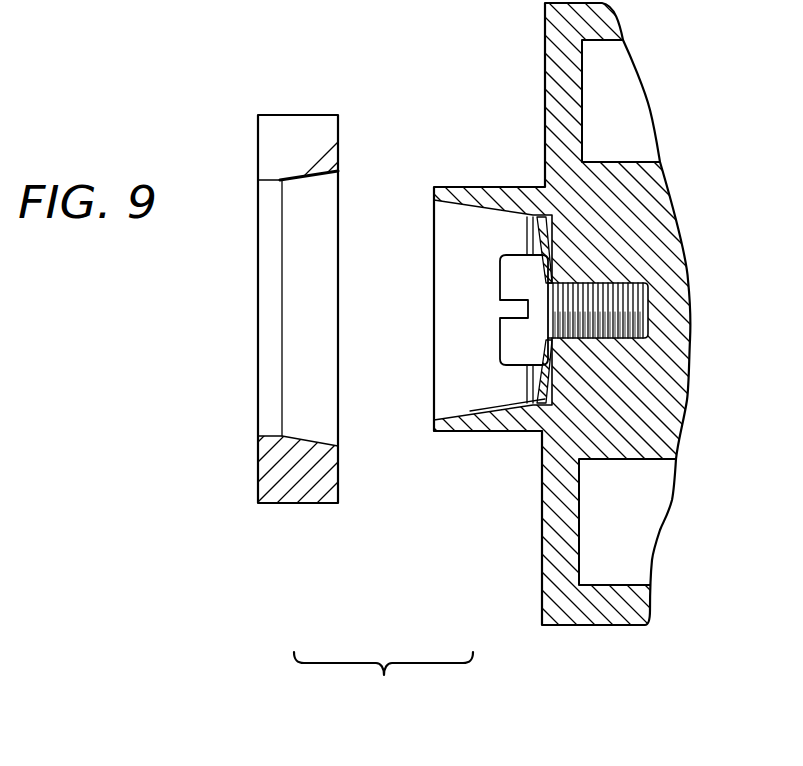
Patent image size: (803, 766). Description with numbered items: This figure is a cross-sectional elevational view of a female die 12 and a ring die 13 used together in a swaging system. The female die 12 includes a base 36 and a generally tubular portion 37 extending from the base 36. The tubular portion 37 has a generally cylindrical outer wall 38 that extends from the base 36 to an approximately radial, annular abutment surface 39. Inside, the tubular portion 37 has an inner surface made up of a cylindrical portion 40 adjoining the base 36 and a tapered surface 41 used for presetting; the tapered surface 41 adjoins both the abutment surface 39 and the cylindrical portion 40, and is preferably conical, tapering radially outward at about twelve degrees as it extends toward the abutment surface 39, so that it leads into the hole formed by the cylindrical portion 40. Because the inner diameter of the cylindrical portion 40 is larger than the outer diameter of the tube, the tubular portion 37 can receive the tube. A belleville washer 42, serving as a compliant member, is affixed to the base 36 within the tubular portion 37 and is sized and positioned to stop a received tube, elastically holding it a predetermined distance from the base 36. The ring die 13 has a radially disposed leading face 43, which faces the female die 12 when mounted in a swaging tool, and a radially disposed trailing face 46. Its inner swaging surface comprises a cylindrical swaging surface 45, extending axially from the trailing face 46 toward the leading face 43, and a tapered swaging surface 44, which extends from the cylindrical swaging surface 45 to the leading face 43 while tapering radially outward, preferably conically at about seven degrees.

The female die 12 is at (545, 100).
The ring die 13 is at (360, 338).
The base 36 is at (663, 412).
The tubular portion 37 is at (522, 420).
The cylindrical outer wall 38 is at (470, 432).
The abutment surface 39 is at (433, 427).
The cylindrical portion 40 is at (528, 228).
The tapered surface 41 is at (470, 410).
The belleville washer 42 is at (537, 382).
The leading face 43 is at (340, 200).
The tapered swaging surface 44 is at (315, 295).
The cylindrical swaging surface 45 is at (268, 410).
The trailing face 46 is at (257, 332).